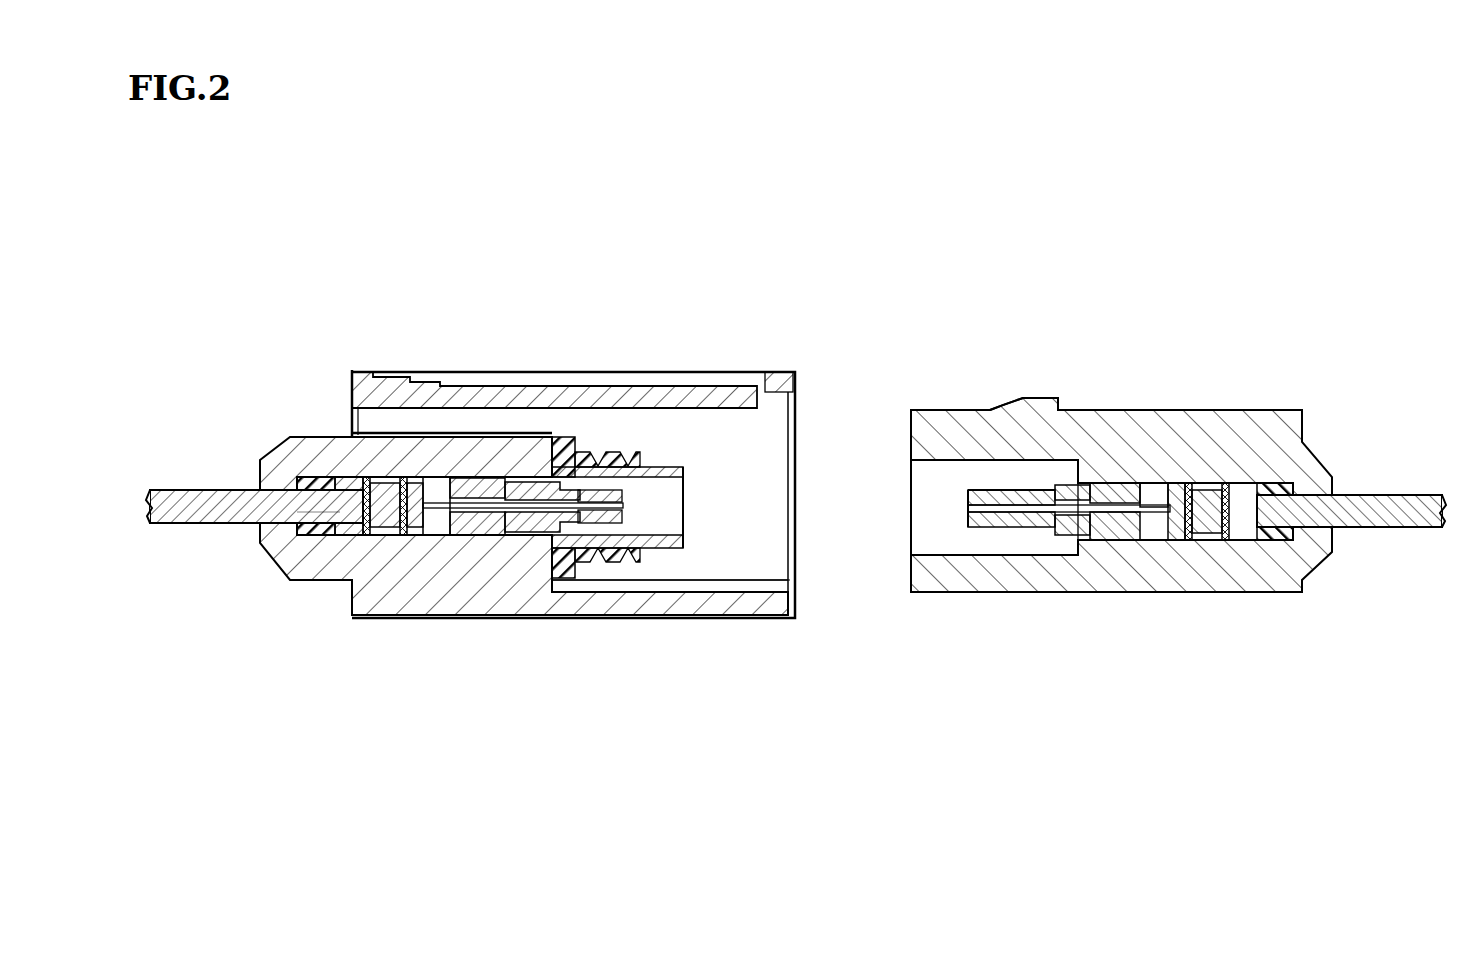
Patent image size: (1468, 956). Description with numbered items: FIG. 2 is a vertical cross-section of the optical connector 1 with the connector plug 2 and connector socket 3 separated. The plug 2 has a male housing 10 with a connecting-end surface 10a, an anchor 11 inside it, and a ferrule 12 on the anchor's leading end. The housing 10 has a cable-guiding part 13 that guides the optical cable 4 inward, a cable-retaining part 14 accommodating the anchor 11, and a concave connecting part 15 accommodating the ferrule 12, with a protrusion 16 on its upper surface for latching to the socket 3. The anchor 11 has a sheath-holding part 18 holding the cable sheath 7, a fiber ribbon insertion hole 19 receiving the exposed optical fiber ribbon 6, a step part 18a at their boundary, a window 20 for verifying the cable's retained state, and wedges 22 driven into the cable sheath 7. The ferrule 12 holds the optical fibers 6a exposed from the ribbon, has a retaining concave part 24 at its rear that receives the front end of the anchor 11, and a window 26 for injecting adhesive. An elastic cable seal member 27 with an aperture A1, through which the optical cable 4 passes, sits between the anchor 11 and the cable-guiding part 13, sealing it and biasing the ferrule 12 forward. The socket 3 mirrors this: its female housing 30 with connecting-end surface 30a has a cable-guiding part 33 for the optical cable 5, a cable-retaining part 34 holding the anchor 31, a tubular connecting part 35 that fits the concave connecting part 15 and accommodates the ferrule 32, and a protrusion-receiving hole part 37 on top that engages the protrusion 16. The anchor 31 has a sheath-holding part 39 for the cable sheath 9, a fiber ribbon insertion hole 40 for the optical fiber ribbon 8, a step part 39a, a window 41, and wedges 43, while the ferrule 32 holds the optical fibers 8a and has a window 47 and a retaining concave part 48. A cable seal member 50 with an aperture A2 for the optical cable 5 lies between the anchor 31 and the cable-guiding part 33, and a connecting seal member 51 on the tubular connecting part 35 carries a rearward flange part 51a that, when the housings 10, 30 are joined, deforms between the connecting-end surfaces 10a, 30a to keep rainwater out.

The optical connector 1 is at (588, 243).
The connector plug 2 is at (1243, 406).
The connector socket 3 is at (357, 370).
The optical cable 4 is at (1390, 493).
The optical cable 5 is at (203, 484).
The optical fiber ribbon 6 is at (1125, 527).
The optical fibers 6a is at (995, 528).
The cable sheath 7 is at (1373, 514).
The optical fiber ribbon 8 is at (468, 520).
The optical fibers 8a is at (612, 526).
The cable sheath 9 is at (196, 527).
The housing 10 is at (1128, 416).
The connecting-end surface 10a is at (907, 440).
The anchor 11 is at (1112, 494).
The ferrule 12 is at (983, 486).
The cable-guiding part 13 is at (1312, 497).
The cable-retaining part 14 is at (1157, 531).
The concave connecting part 15 is at (953, 552).
The protrusion 16 is at (1040, 397).
The sheath-holding part 18 is at (1240, 516).
The step part 18a is at (1176, 526).
The fiber ribbon insertion hole 19 is at (1100, 531).
The window 20 is at (1155, 492).
The wedge 22 is at (1204, 486).
The retaining concave part 24 is at (1038, 536).
The window 26 is at (1033, 489).
The cable seal member 27 is at (1273, 486).
The housing 30 is at (562, 371).
The connecting-end surface 30a is at (560, 442).
The anchor 31 is at (440, 487).
The ferrule 32 is at (622, 497).
The cable-guiding part 33 is at (275, 495).
The cable-retaining part 34 is at (428, 533).
The tubular connecting part 35 is at (678, 560).
The protrusion-receiving hole part 37 is at (706, 404).
The sheath-holding part 39 is at (343, 530).
The step part 39a is at (404, 533).
The fiber ribbon insertion hole 40 is at (482, 532).
The window 41 is at (415, 500).
The wedge 43 is at (372, 480).
The window 47 is at (490, 488).
The retaining concave part 48 is at (537, 532).
The cable seal member 50 is at (318, 483).
The connecting seal member 51 is at (651, 468).
The flange part 51a is at (566, 440).
The aperture A1 is at (1322, 543).
The aperture A2 is at (305, 511).